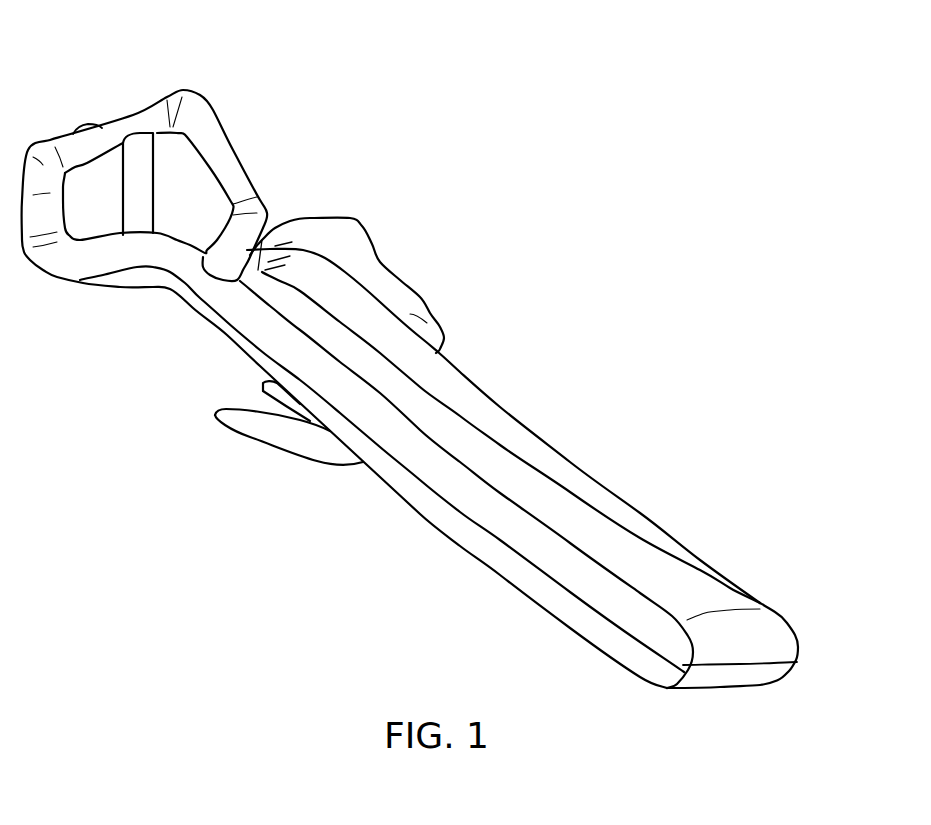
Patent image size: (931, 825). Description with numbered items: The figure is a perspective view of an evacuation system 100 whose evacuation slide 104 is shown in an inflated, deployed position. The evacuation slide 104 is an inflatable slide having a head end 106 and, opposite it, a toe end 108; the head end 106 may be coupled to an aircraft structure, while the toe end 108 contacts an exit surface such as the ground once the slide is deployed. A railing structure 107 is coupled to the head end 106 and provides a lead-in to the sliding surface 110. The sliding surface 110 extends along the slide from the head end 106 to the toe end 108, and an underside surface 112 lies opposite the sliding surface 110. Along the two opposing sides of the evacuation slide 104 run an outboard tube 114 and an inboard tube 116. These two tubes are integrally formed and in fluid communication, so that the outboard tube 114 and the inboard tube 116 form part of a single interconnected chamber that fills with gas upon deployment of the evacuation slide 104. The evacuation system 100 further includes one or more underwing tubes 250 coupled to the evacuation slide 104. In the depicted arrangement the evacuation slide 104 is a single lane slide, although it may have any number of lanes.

The evacuation system 100 is at (345, 78).
The evacuation slide 104 is at (133, 98).
The head end 106 is at (257, 268).
The railing structure 107 is at (193, 113).
The toe end 108 is at (763, 667).
The sliding surface 110 is at (553, 504).
The underside surface 112 is at (421, 516).
The outboard tube 114 is at (260, 343).
The inboard tube 116 is at (517, 440).
The underwing tube 250 is at (257, 437).